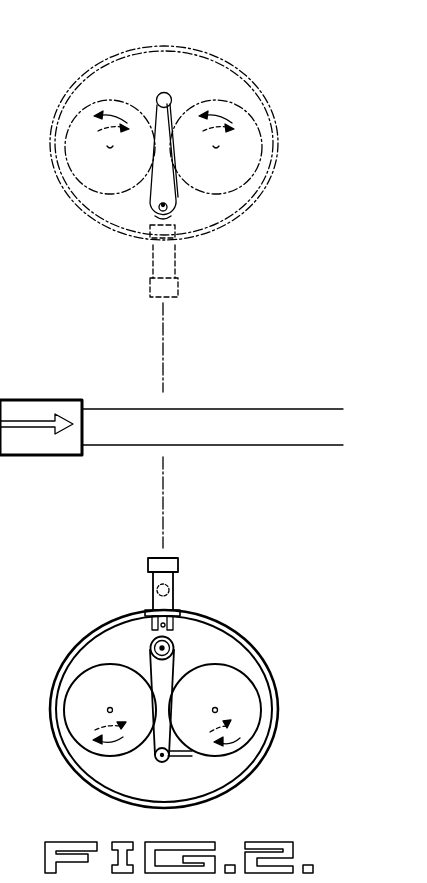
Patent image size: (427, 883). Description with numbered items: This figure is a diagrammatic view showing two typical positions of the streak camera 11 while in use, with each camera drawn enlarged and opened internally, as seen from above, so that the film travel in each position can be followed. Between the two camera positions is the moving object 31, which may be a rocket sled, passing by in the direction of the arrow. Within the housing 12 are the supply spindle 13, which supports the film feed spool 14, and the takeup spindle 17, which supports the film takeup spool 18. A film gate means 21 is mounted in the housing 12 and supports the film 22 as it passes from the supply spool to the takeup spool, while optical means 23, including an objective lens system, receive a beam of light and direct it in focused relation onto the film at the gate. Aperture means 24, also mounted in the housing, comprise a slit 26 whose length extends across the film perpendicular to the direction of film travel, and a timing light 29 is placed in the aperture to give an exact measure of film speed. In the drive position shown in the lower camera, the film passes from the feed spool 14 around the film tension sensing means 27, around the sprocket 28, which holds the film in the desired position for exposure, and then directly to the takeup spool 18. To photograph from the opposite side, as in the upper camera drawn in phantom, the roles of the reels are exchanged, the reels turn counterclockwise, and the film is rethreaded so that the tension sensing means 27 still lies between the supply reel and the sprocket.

The streak camera 11 is at (272, 208).
The housing 12 is at (76, 214).
The supply spindle 13 is at (212, 710).
The film feed spool 14 is at (253, 165).
The takeup spindle 17 is at (108, 709).
The film takeup spool 18 is at (70, 172).
The film gate means 21 is at (192, 229).
The film 22 is at (147, 188).
The optical means 23 is at (188, 279).
The aperture means 24 is at (143, 234).
The slit 26 is at (171, 216).
The film tension sensing means 27 is at (168, 93).
The sprocket 28 is at (177, 194).
The timing light 29 is at (167, 624).
The moving object 31 is at (30, 450).